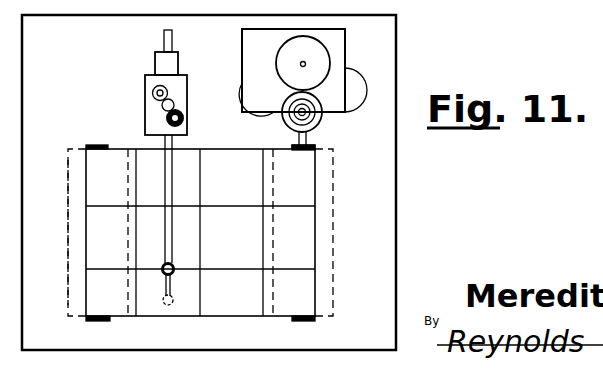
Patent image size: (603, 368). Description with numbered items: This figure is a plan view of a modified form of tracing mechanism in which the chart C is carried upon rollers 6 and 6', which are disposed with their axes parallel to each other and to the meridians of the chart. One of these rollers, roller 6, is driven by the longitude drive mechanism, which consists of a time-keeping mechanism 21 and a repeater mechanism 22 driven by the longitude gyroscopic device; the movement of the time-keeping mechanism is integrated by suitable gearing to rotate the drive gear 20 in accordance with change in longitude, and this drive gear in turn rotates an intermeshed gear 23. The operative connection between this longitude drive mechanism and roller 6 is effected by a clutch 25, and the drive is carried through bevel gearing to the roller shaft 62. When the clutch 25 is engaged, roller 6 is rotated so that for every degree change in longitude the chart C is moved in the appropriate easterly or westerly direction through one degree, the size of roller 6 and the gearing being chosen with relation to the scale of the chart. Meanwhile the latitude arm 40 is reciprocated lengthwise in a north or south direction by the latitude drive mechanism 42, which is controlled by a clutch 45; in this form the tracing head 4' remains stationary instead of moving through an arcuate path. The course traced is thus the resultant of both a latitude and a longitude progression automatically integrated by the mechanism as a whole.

The tracing head 4' is at (149, 82).
The latitude drive mechanism 42 is at (152, 94).
The clutch 45 is at (176, 107).
The latitude arm 40 is at (165, 143).
The drive gear 20 is at (293, 70).
The time-keeping mechanism 21 is at (356, 81).
The repeater mechanism 22 is at (239, 97).
The intermeshed gear 23 is at (318, 107).
The clutch 25 is at (308, 119).
The roller shaft 62 is at (298, 136).
The roller 6 is at (228, 232).
The roller 6' is at (51, 232).
The chart C is at (200, 233).